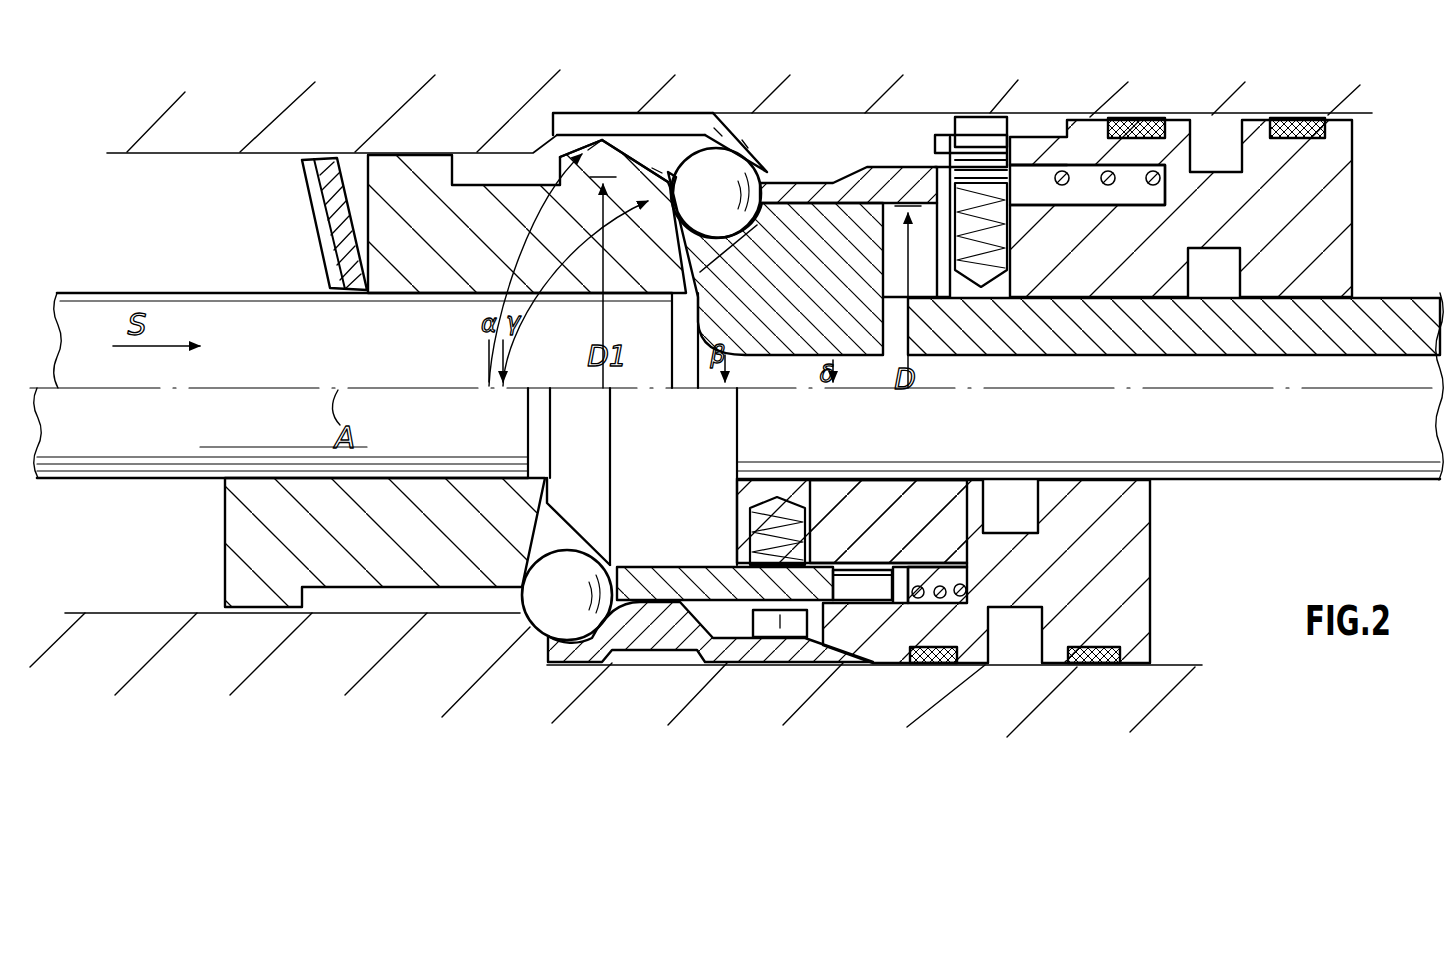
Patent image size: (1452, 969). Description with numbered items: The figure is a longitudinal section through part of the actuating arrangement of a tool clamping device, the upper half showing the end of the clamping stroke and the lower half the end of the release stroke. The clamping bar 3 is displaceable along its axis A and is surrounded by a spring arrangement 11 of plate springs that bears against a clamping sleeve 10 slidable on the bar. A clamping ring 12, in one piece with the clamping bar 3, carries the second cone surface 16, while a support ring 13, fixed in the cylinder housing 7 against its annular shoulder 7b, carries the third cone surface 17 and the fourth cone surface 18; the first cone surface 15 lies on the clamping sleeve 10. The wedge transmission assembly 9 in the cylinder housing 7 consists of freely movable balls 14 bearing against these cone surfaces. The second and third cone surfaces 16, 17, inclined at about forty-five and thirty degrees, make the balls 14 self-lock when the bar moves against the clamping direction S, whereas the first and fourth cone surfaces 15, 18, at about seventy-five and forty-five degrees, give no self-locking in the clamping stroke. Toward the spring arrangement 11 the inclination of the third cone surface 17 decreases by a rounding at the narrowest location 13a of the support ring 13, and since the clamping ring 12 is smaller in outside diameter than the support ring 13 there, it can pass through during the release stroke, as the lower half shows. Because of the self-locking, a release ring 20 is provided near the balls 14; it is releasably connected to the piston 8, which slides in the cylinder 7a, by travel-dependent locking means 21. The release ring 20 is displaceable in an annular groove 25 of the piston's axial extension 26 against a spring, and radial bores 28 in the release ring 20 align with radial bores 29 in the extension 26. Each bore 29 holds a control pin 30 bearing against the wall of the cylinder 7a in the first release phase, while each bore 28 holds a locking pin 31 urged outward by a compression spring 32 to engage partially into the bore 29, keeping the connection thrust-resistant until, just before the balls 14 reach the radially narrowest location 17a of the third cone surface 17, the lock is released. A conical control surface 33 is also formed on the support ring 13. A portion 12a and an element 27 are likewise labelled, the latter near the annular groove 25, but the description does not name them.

The clamping bar 3 is at (118, 292).
The cylinder housing 7 is at (158, 120).
The cylinder 7a is at (1371, 117).
The annular shoulder 7b is at (551, 118).
The piston 8 is at (1340, 200).
The wedge transmission assembly 9 is at (768, 127).
The clamping sleeve 10 is at (477, 187).
The spring arrangement 11 is at (330, 150).
The clamping ring 12 is at (822, 215).
The sleeve portion 12a is at (768, 236).
The support ring 13 is at (685, 108).
The narrowest location of the support ring 13a is at (638, 150).
The balls 14 is at (742, 140).
The first cone surface 15 is at (720, 130).
The second cone surface 16 is at (770, 165).
The third cone surface 17 is at (721, 163).
The radially narrowest location of the third cone surface 17a is at (652, 168).
The fourth cone surface 18 is at (592, 146).
The release ring 20 is at (655, 605).
The locking means 21 is at (1030, 116).
The annular groove 25 is at (950, 608).
The axial extension of the piston 26 is at (850, 632).
The rollers 27 is at (940, 600).
The radial bores 28 is at (985, 150).
The radial bores 29 is at (993, 130).
The control pin 30 is at (960, 130).
The locking pin 31 is at (1040, 132).
The compression spring 32 is at (1122, 117).
The conical control surface 33 is at (838, 118).